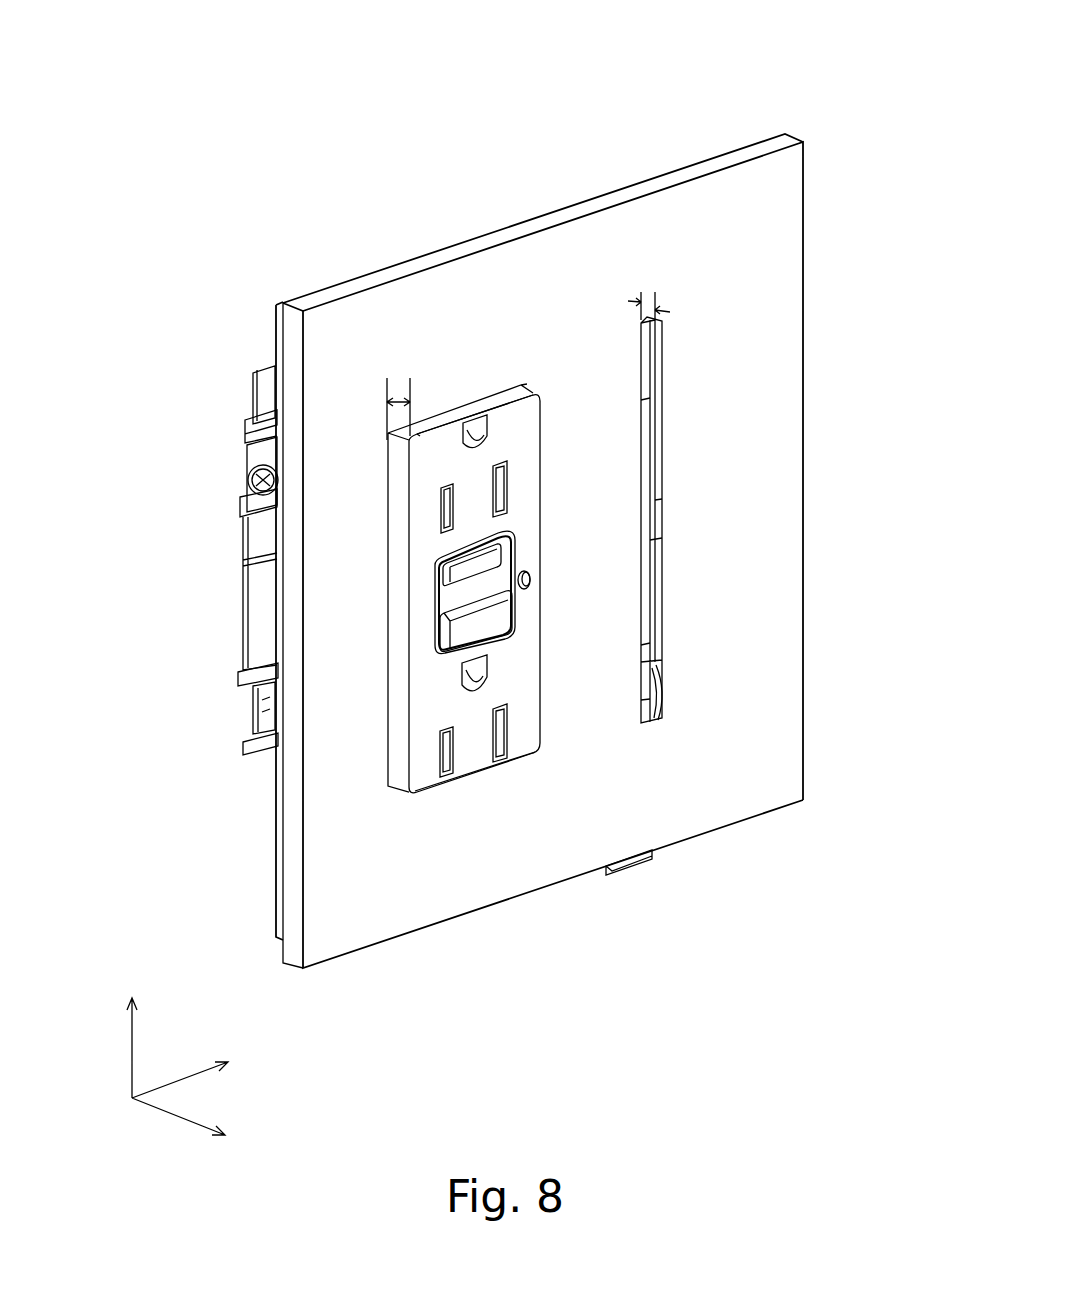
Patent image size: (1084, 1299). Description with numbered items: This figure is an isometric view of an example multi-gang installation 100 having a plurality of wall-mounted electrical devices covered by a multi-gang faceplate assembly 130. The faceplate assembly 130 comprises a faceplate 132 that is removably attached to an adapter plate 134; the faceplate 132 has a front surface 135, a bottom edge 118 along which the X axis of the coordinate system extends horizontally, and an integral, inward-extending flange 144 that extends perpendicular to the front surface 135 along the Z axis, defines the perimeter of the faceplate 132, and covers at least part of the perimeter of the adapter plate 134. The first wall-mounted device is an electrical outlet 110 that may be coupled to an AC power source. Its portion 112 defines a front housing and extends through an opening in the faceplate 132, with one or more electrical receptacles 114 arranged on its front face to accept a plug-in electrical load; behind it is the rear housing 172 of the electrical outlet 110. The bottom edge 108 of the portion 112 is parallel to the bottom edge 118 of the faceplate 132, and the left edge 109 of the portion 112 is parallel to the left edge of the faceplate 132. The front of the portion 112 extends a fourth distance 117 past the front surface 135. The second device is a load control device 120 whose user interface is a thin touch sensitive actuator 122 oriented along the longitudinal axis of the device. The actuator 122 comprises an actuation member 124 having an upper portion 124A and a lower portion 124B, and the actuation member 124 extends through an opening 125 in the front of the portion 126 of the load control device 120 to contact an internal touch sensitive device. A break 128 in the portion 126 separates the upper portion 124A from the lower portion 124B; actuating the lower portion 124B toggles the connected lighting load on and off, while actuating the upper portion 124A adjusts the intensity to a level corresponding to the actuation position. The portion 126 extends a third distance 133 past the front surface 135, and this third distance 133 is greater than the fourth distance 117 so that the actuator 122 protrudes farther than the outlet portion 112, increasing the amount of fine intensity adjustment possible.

The multi-gang installation 100 is at (305, 80).
The bottom edge 108 is at (518, 753).
The left edge 109 is at (410, 730).
The electrical outlet 110 is at (373, 722).
The portion 112 is at (427, 633).
The electrical receptacles 114 is at (447, 445).
The fourth distance 117 is at (400, 400).
The bottom edge 118 is at (447, 920).
The load control device 120 is at (692, 470).
The thin touch sensitive actuator 122 is at (660, 527).
The actuation member 124 is at (645, 347).
The upper portion 124A is at (660, 555).
The lower portion 124B is at (662, 688).
The opening 125 is at (647, 470).
The portion 126 is at (643, 640).
The break 128 is at (662, 667).
The multi-gang faceplate assembly 130 is at (305, 262).
The faceplate 132 is at (380, 917).
The third distance 133 is at (670, 312).
The adapter plate 134 is at (280, 352).
The front surface 135 is at (750, 208).
The flange 144 is at (736, 158).
The rear housing 172 is at (243, 515).